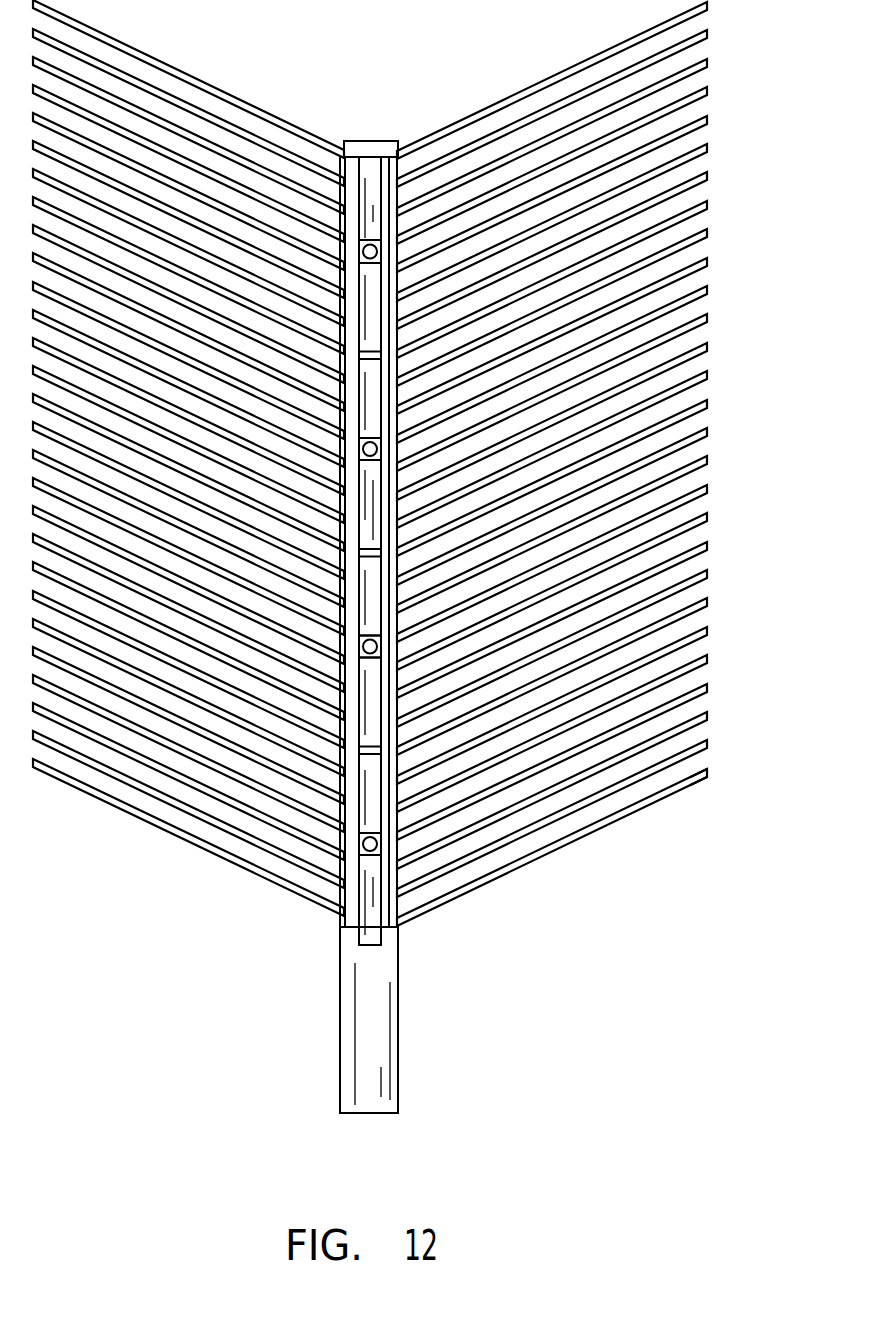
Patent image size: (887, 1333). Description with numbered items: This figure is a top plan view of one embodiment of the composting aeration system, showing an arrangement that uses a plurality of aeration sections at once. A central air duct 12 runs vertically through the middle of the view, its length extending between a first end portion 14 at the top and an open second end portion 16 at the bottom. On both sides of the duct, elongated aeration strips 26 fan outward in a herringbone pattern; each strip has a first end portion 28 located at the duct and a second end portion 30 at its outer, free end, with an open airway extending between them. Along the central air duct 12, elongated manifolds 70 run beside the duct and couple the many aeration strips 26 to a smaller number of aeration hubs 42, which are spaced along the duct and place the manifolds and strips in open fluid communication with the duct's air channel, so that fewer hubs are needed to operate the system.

The central air duct 12 is at (360, 1028).
The first end portion 14 is at (371, 142).
The open second end portion 16 is at (400, 1101).
The elongated aeration strips 26 is at (537, 170).
The first end portions 28 is at (399, 932).
The second end portions 30 is at (706, 790).
The aeration hubs 42 is at (360, 252).
The manifolds 70 is at (356, 205).